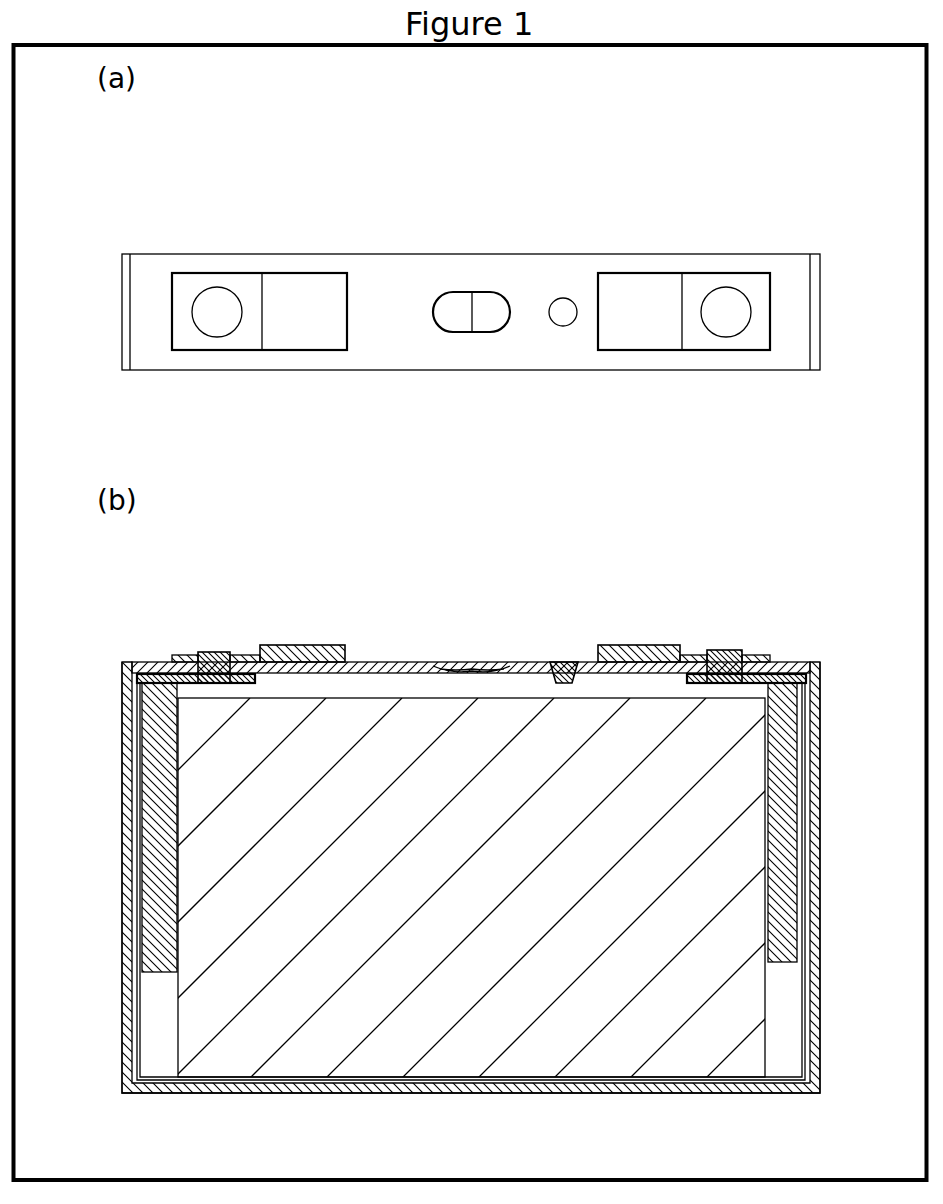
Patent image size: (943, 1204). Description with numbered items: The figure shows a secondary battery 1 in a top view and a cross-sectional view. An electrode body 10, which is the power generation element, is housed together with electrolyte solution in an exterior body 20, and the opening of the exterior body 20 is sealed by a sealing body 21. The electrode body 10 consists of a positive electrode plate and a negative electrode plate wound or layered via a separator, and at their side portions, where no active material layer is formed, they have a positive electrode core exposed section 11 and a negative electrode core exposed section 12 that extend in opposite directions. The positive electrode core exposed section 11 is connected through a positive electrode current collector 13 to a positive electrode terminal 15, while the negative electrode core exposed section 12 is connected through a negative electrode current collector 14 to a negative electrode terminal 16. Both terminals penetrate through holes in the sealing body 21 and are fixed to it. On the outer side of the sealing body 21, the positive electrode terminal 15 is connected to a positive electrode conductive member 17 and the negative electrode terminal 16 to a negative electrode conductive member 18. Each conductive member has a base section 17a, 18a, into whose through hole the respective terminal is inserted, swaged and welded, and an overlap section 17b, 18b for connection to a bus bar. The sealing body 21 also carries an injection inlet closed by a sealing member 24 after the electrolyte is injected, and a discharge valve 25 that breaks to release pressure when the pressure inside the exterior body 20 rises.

The secondary battery 1 is at (771, 152).
The electrode body 10 is at (517, 1012).
The positive electrode core exposed section 11 is at (785, 1022).
The negative electrode core exposed section 12 is at (157, 1017).
The positive electrode current collector 13 is at (785, 808).
The negative electrode current collector 14 is at (155, 828).
The positive electrode terminal 15 is at (725, 302).
The negative electrode terminal 16 is at (216, 302).
The positive electrode conductive member 17 is at (725, 168).
The base section 17a is at (698, 290).
The overlap section 17b is at (632, 290).
The negative electrode conductive member 18 is at (337, 168).
The base section 18a is at (245, 290).
The overlap section 18b is at (312, 290).
The exterior body 20 is at (822, 735).
The sealing body 21 is at (505, 252).
The sealing member 24 is at (563, 305).
The discharge valve 25 is at (455, 302).